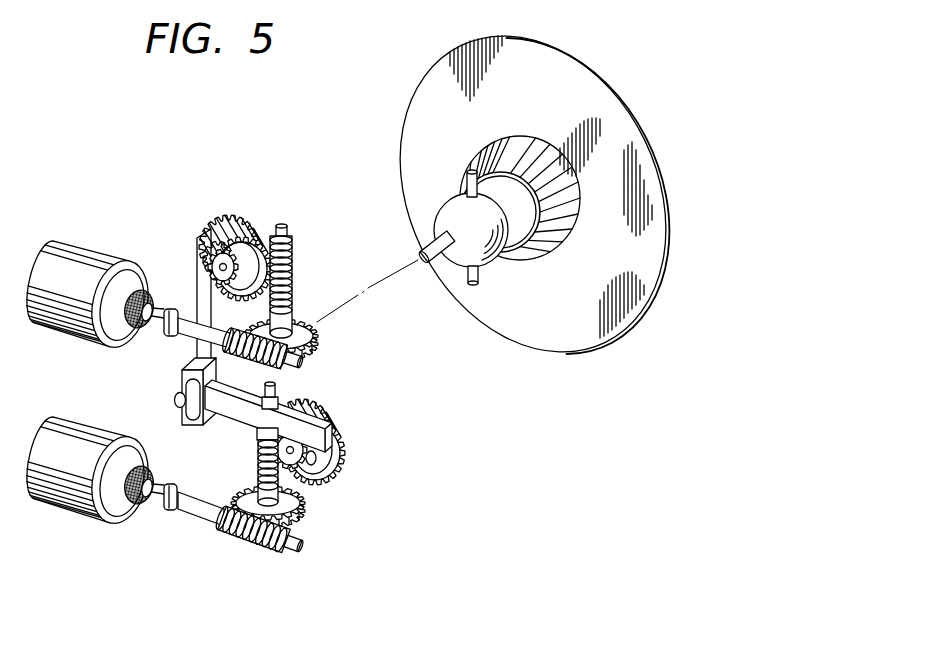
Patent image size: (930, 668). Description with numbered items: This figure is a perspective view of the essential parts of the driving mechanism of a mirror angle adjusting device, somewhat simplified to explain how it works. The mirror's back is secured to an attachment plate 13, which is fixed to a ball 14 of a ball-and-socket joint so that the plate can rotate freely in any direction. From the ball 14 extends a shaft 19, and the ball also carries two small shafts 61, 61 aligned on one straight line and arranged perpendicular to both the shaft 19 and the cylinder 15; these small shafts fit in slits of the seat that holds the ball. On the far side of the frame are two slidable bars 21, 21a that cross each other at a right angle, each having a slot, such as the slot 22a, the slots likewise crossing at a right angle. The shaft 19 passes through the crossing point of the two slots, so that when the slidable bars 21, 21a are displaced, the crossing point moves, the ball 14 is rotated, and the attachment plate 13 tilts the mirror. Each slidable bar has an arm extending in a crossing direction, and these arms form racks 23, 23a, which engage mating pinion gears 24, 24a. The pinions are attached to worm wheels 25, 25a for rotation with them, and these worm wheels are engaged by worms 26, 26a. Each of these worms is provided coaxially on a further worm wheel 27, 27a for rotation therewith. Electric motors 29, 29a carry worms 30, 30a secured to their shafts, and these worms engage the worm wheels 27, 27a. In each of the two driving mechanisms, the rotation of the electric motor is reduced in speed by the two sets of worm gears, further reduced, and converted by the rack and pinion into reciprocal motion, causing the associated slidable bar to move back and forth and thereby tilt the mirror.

The attachment plate 13 is at (583, 343).
The ball 14 is at (496, 253).
The cylinder 15 is at (523, 231).
The shaft 19 is at (419, 249).
The slidable bar 21 is at (197, 247).
The slidable bar 21a is at (198, 427).
The slot 22a is at (186, 417).
The rack 23 is at (197, 288).
The rack 23a is at (338, 467).
The pinion gear 24 is at (253, 238).
The pinion gear 24a is at (307, 463).
The worm wheel 25 is at (240, 212).
The worm wheel 25a is at (330, 410).
The worm 26 is at (293, 268).
The worm 26a is at (257, 468).
The worm wheel 27 is at (318, 332).
The worm wheel 27a is at (300, 523).
The electric motor 29 is at (70, 337).
The electric motor 29a is at (83, 518).
The worm 30 is at (296, 373).
The worm 30a is at (242, 530).
The small shafts 61 is at (465, 183).